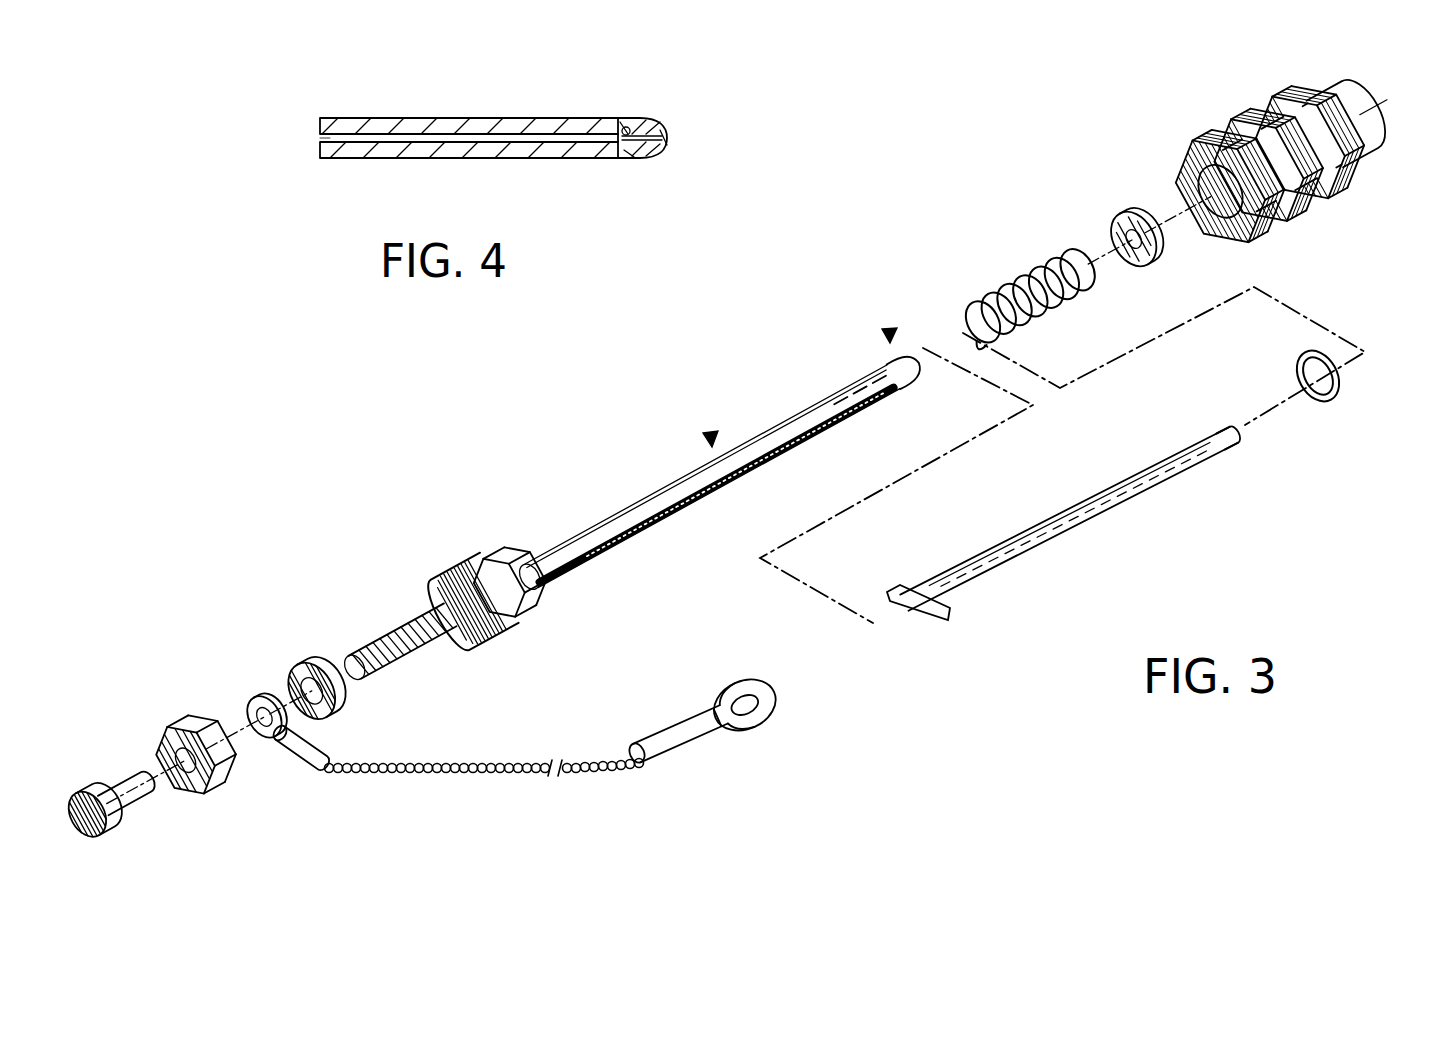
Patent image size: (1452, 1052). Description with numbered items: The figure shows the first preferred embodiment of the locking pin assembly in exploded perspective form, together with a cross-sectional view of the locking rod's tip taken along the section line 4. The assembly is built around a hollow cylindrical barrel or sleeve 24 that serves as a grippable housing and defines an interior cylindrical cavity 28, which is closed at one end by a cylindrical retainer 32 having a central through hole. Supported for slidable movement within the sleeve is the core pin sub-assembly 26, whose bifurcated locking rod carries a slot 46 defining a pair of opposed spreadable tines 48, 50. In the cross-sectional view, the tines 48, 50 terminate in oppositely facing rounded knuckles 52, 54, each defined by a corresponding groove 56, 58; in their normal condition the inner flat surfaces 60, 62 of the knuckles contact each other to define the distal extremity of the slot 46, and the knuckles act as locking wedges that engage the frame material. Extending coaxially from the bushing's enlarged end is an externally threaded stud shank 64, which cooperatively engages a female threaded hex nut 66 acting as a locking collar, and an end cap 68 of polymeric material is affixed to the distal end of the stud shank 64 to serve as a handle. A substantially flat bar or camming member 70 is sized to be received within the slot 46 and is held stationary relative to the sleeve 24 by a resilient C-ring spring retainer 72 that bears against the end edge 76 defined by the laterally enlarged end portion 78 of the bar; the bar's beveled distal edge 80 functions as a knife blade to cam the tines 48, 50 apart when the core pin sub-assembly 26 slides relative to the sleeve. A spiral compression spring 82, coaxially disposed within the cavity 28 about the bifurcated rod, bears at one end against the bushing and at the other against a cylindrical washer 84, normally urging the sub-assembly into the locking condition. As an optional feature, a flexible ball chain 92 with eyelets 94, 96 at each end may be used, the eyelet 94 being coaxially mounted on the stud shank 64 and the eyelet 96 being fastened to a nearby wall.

In FIG. 3, the section line 4— 4 is at (727, 450).
In FIG. 3, the hollow cylindrical barrel or sleeve 24 is at (1252, 149).
In FIG. 3, the core pin sub-assembly 26 is at (478, 503).
In FIG. 3, the interior cylindrical cavity 28 is at (1190, 183).
In FIG. 3, the cylindrical retainer 32 is at (283, 660).
In FIG. 4, the slot 46 is at (350, 137).
In FIG. 3, the slot 46 is at (670, 527).
In FIG. 4, the tine 48 is at (443, 130).
In FIG. 3, the tine 48 is at (705, 478).
In FIG. 4, the tine 50 is at (430, 174).
In FIG. 4, the knuckle 52 is at (653, 128).
In FIG. 4, the knuckle 54 is at (663, 153).
In FIG. 4, the groove 56 is at (627, 133).
In FIG. 4, the groove 58 is at (630, 157).
In FIG. 4, the inner flat surface 60 is at (670, 147).
In FIG. 4, the inner flat surface 62 is at (620, 153).
In FIG. 3, the externally threaded stud shank 64 is at (455, 600).
In FIG. 3, the hex nut 66 is at (227, 787).
In FIG. 3, the end cap 68 is at (150, 803).
In FIG. 3, the flat bar or camming member 70 is at (1105, 530).
In FIG. 3, the resilient C-ring spring retainer 72 is at (1345, 385).
In FIG. 3, the end edge 76 is at (1062, 497).
In FIG. 3, the laterally enlarged end portion 78 is at (950, 600).
In FIG. 3, the beveled distal edge 80 is at (1250, 425).
In FIG. 3, the spiral compression spring 82 is at (1043, 257).
In FIG. 3, the cylindrical washer 84 is at (1150, 263).
In FIG. 3, the flexible ball chain 92 is at (484, 797).
In FIG. 3, the eyelet 94 is at (247, 693).
In FIG. 3, the eyelet 96 is at (573, 724).